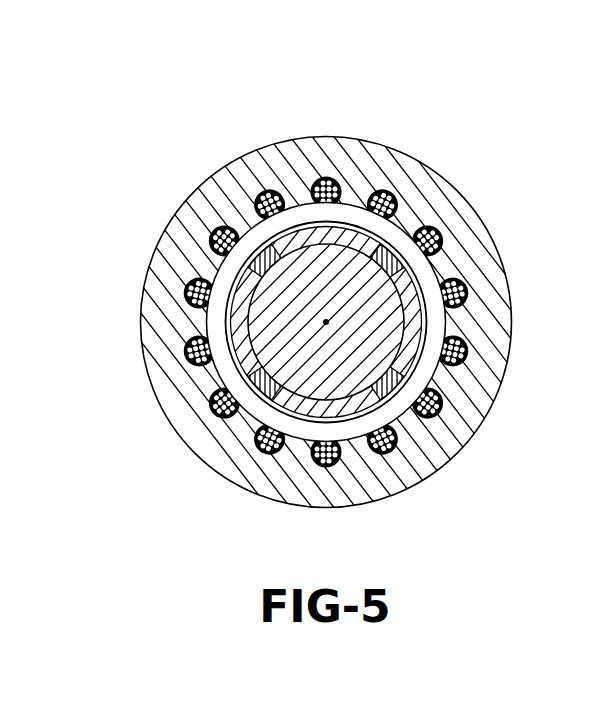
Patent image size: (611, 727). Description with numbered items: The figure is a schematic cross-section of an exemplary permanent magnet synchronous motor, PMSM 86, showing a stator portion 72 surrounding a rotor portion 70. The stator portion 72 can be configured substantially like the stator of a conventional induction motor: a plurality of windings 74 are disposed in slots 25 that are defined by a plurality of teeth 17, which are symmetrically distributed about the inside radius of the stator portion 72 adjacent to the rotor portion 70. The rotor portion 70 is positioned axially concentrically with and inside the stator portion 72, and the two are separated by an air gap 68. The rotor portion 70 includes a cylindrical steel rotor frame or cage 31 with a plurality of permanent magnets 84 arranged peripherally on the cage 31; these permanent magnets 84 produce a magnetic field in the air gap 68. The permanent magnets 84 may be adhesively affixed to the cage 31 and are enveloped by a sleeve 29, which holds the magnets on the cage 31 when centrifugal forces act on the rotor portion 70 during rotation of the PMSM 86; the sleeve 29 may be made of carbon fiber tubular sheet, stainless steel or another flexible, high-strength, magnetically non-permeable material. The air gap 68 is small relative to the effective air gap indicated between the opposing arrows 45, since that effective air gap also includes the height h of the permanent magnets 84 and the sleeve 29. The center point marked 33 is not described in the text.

The permanent magnet synchronous motor 86 is at (140, 180).
The teeth 17 is at (330, 204).
The stator portion 72 is at (436, 178).
The slots 25 is at (192, 282).
The permanent magnets 84 is at (237, 333).
The windings 74 is at (292, 440).
The sleeve 29 is at (257, 381).
The air gap 68 is at (427, 280).
The opposing arrows 45 is at (404, 363).
The rotor portion 70 is at (348, 414).
The rotor cage 31 is at (250, 292).
The central axis 33 is at (325, 327).
The height of permanent magnets h is at (297, 422).